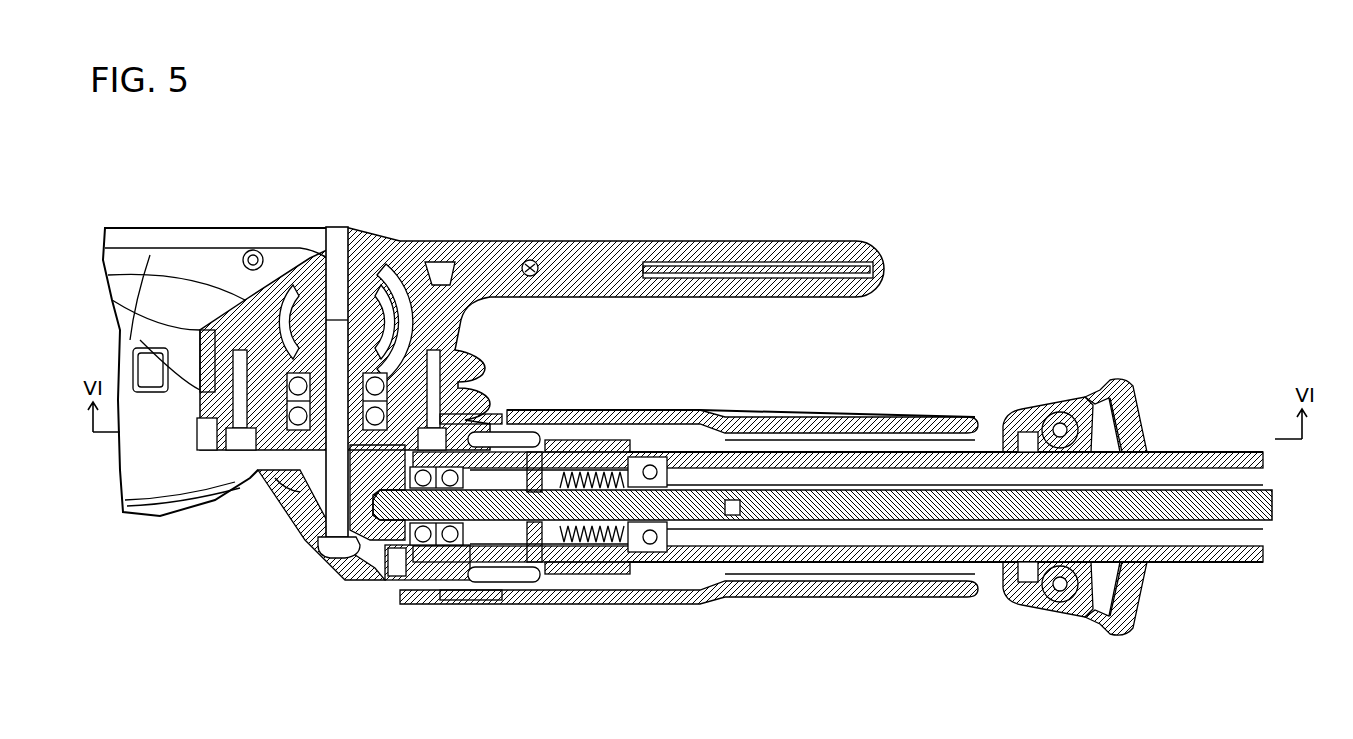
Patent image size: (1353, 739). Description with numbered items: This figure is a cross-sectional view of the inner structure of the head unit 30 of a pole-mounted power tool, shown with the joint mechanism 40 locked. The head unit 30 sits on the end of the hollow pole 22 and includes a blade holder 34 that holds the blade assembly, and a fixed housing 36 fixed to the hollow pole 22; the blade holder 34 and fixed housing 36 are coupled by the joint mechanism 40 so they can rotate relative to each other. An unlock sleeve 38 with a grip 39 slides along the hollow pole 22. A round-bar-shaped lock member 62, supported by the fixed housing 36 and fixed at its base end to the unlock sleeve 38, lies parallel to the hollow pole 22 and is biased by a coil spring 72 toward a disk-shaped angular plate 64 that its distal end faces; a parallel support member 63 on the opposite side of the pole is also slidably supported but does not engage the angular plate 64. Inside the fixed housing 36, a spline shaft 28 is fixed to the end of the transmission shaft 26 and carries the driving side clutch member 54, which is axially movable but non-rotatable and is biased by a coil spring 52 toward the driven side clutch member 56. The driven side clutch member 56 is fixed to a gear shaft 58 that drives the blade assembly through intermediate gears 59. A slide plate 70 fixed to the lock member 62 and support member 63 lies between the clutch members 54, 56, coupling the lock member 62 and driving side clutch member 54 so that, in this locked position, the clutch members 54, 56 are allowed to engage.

The hollow pole 22 is at (1245, 565).
The transmission shaft 26 is at (1178, 520).
The spline shaft 28 is at (680, 530).
The head unit 30 is at (995, 253).
The blade holder 34 is at (405, 240).
The fixed housing 36 is at (915, 418).
The unlock sleeve 38 is at (1110, 385).
The grip 39 is at (1218, 452).
The joint mechanism 40 is at (327, 550).
The coil spring 52 is at (640, 552).
The driving side clutch member 54 is at (534, 562).
The driven side clutch member 56 is at (498, 545).
The gear shaft 58 is at (428, 562).
The intermediate gears 59 is at (212, 345).
The lock member 62 is at (827, 440).
The support member 63 is at (804, 590).
The angular plate 64 is at (495, 418).
The slide plate 70 is at (562, 455).
The coil spring 72 is at (598, 455).